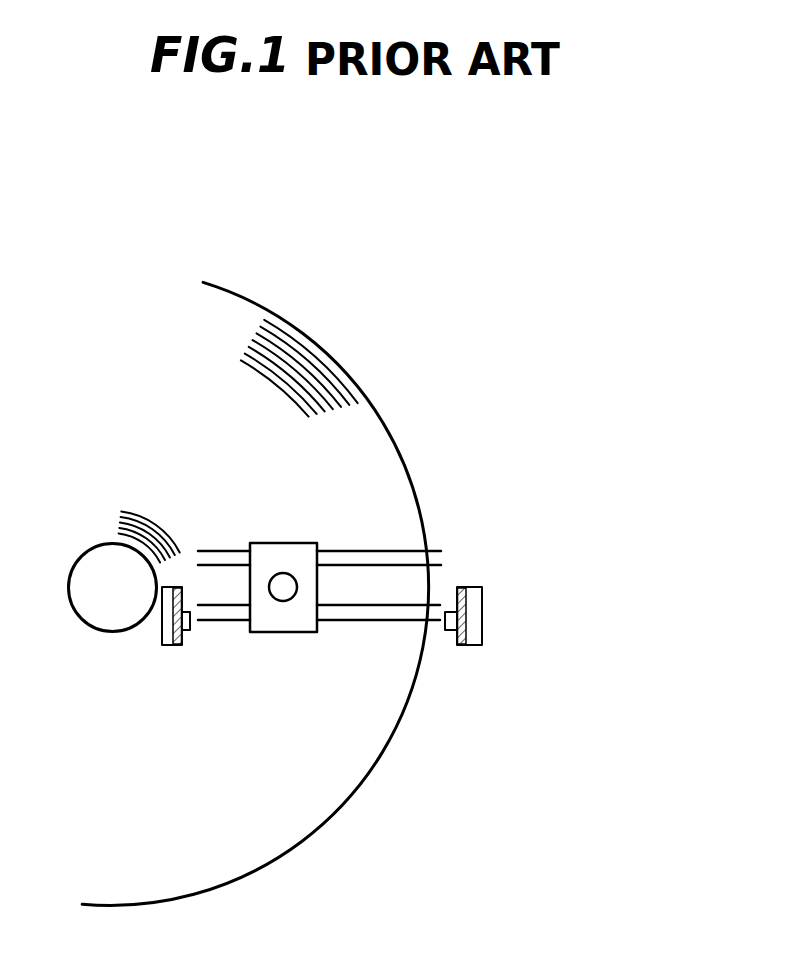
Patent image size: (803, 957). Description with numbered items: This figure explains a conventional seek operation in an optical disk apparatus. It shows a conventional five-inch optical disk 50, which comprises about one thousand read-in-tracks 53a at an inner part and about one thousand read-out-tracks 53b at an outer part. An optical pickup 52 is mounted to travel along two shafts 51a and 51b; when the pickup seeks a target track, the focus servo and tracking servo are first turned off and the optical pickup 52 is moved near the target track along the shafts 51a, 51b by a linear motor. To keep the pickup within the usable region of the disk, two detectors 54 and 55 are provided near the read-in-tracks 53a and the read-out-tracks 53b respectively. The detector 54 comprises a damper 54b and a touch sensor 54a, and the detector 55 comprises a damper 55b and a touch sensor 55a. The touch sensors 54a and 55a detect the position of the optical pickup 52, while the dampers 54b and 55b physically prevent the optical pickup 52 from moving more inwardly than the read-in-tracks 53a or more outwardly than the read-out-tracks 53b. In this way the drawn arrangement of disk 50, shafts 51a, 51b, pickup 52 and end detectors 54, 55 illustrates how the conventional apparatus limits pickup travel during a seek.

The optical disk 50 is at (395, 441).
The shaft 51a is at (398, 551).
The shaft 51b is at (400, 603).
The optical pickup 52 is at (300, 621).
The read-in-tracks 53a is at (158, 537).
The read-out-tracks 53b is at (318, 375).
The detector 54 is at (160, 632).
The touch sensor 54a is at (193, 625).
The damper 54b is at (164, 646).
The detector 55 is at (489, 619).
The touch sensor 55a is at (447, 631).
The damper 55b is at (472, 645).